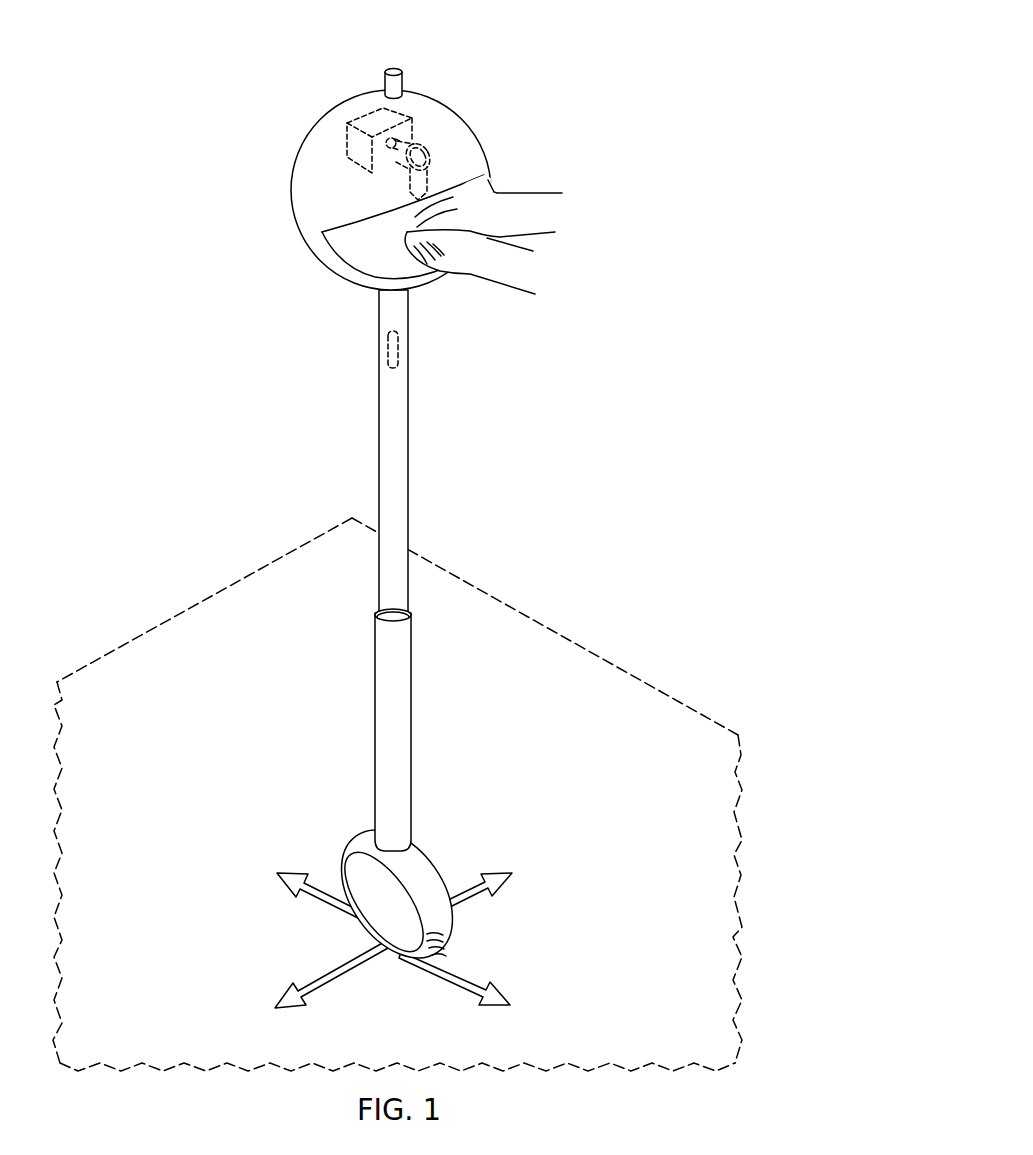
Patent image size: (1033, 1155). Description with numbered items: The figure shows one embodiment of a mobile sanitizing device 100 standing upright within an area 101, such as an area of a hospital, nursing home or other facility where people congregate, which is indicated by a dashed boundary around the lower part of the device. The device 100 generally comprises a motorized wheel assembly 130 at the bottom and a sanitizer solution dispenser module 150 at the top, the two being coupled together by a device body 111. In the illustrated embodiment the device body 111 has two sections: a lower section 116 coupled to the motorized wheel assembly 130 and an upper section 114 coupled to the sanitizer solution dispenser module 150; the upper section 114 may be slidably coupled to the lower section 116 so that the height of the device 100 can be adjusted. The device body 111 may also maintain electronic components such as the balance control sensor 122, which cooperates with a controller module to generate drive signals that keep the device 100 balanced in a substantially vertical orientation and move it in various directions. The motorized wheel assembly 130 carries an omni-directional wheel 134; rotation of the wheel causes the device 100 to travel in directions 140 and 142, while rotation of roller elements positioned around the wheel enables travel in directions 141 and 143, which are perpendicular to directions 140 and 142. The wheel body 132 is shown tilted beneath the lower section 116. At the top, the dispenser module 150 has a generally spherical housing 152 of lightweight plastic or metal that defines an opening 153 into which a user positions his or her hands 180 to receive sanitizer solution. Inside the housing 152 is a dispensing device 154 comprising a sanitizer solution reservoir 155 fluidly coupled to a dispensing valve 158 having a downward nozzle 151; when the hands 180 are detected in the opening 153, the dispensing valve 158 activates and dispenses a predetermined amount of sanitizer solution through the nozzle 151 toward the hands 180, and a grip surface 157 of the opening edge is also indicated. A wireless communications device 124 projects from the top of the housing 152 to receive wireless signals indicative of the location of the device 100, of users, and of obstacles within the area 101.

The mobile sanitizing device 100 is at (660, 50).
The area 101 is at (397, 794).
The device body 111 is at (413, 570).
The upper section 114 is at (379, 469).
The lower section 116 is at (376, 667).
The balance control sensor 122 is at (388, 350).
The wireless communications device 124 is at (391, 67).
The motorized wheel assembly 130 is at (377, 889).
The wheel 132 is at (372, 903).
The omni-directional wheel 134 is at (478, 955).
The direction 140 is at (278, 883).
The direction 141 is at (280, 998).
The direction 142 is at (464, 992).
The direction 143 is at (493, 880).
The sanitizer solution dispenser module 150 is at (413, 170).
The nozzle 151 is at (404, 183).
The housing 152 is at (436, 102).
The opening 153 is at (367, 238).
The dispensing device 154 is at (292, 126).
The sanitizer solution reservoir 155 is at (355, 166).
The grip surface 157 is at (422, 267).
The dispensing valve 158 is at (479, 130).
The hands 180 is at (491, 224).